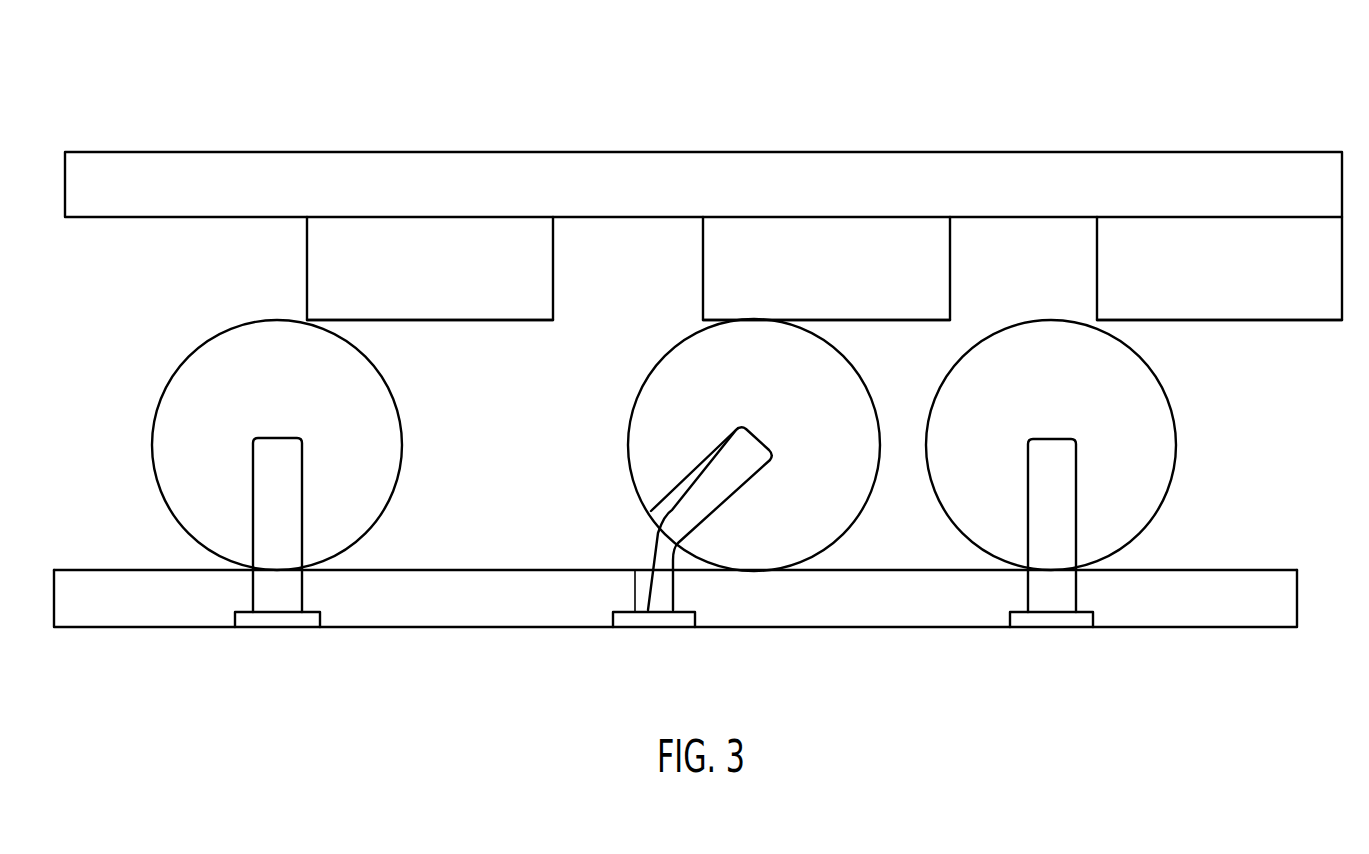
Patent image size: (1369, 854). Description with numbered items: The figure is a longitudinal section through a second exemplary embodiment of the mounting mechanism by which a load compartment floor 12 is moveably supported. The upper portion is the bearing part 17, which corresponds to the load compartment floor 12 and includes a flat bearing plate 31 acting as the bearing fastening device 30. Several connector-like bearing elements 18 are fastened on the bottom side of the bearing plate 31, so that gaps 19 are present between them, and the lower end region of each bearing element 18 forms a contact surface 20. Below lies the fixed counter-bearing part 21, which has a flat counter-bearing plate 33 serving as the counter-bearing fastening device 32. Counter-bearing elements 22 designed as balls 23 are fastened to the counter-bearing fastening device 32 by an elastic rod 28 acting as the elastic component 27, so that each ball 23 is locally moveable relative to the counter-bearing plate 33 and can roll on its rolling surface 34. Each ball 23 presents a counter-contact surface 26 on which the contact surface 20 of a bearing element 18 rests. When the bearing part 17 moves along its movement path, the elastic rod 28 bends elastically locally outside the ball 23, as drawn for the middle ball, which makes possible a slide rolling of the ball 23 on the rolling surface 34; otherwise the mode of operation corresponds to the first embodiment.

The load compartment floor 12 is at (537, 163).
The bearing part 17 is at (703, 242).
The bearing element 18 is at (383, 228).
The gap 19 is at (640, 248).
The contact surface 20 is at (483, 321).
The counter-bearing part 21 is at (679, 480).
The counter-bearing element 22 is at (726, 480).
The ball 23 is at (382, 455).
The counter-contact surface 26 is at (278, 320).
The elastic component 27 is at (675, 565).
The elastic rod 28 is at (270, 545).
The bearing fastening device 30 is at (703, 157).
The bearing plate 31 is at (703, 157).
The counter-bearing fastening device 32 is at (675, 604).
The counter-bearing plate 33 is at (960, 613).
The rolling surface 34 is at (420, 568).